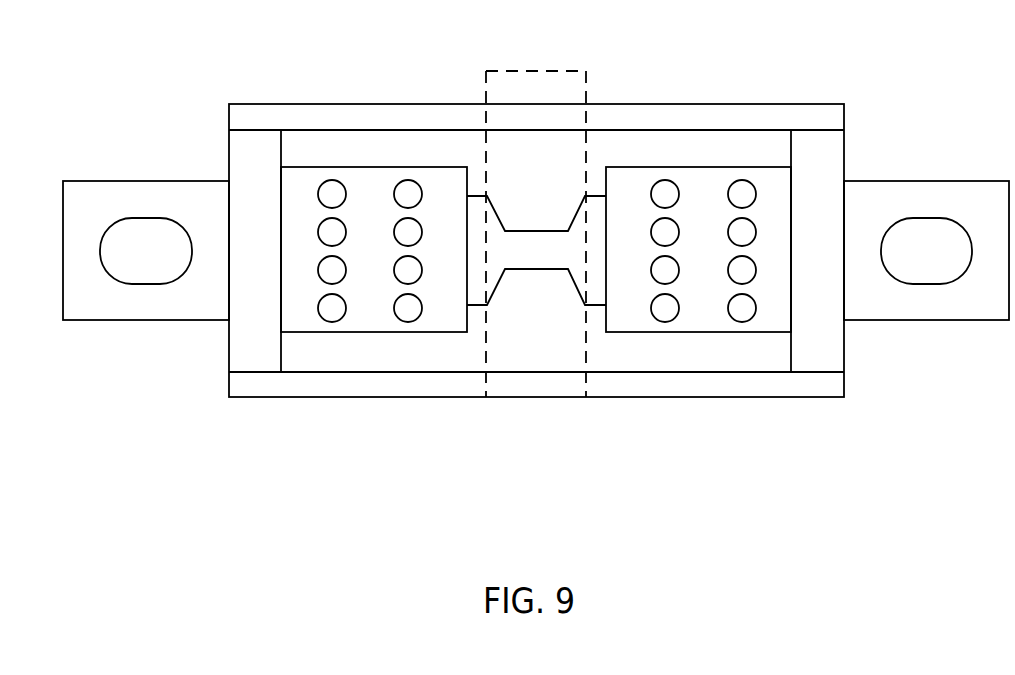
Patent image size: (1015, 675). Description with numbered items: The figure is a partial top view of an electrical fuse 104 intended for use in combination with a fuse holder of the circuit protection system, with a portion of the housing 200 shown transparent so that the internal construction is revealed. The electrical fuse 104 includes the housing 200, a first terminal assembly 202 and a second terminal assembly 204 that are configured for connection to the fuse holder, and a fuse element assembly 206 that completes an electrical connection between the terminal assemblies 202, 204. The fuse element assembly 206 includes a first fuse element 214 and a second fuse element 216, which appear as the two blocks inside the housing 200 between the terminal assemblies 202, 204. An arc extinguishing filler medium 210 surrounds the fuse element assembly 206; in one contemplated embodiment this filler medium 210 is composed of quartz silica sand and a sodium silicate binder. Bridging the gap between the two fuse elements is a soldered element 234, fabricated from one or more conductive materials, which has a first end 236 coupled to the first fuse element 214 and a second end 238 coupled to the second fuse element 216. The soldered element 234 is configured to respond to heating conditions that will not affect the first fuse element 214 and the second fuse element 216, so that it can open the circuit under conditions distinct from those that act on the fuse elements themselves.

The electrical fuse 104 is at (840, 80).
The housing 200 is at (288, 104).
The first terminal assembly 202 is at (229, 138).
The second terminal assembly 204 is at (844, 139).
The fuse element assembly 206 is at (764, 358).
The arc extinguishing filler medium 210 is at (415, 150).
The first fuse element 214 is at (333, 332).
The second fuse element 216 is at (706, 332).
The soldered element 234 is at (531, 243).
The first end 236 is at (467, 232).
The second end 238 is at (606, 232).